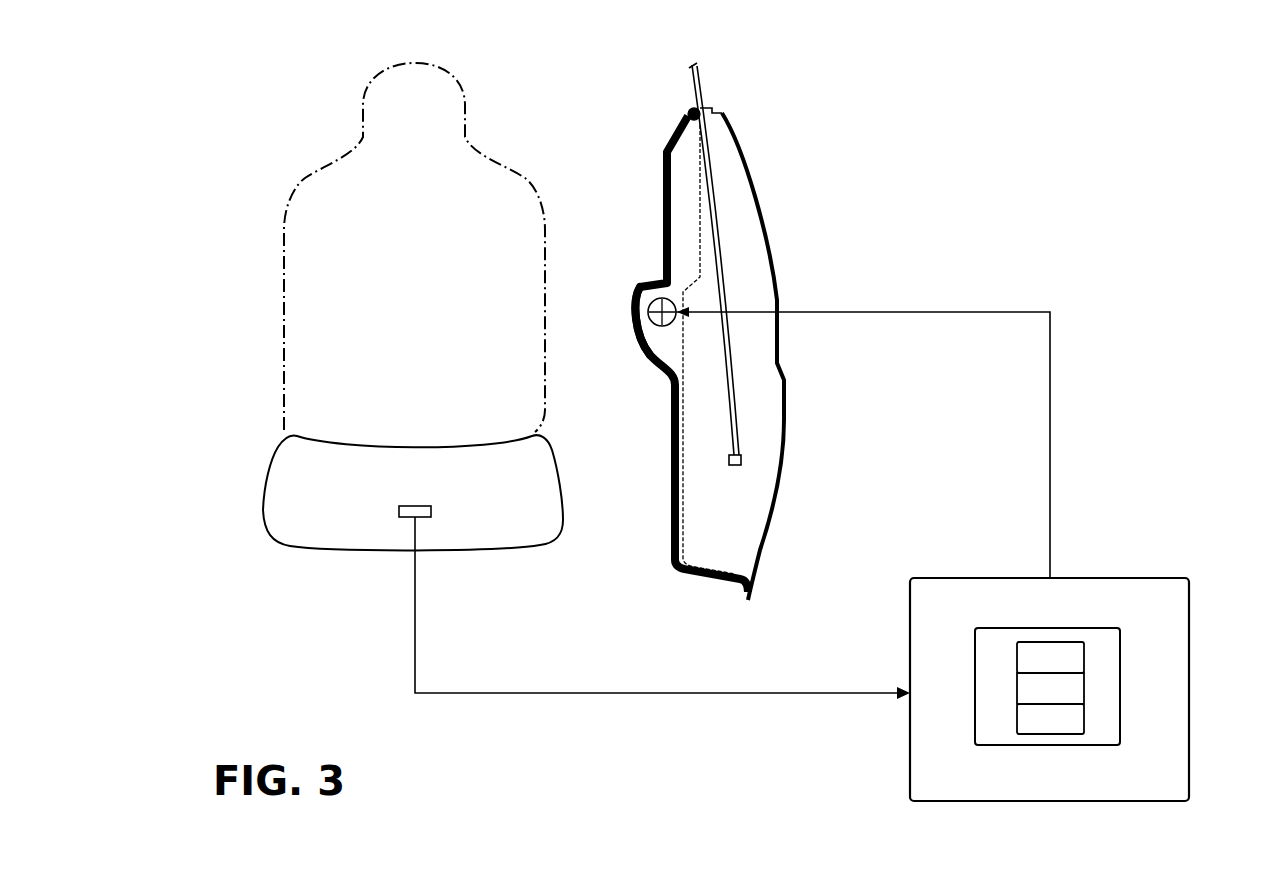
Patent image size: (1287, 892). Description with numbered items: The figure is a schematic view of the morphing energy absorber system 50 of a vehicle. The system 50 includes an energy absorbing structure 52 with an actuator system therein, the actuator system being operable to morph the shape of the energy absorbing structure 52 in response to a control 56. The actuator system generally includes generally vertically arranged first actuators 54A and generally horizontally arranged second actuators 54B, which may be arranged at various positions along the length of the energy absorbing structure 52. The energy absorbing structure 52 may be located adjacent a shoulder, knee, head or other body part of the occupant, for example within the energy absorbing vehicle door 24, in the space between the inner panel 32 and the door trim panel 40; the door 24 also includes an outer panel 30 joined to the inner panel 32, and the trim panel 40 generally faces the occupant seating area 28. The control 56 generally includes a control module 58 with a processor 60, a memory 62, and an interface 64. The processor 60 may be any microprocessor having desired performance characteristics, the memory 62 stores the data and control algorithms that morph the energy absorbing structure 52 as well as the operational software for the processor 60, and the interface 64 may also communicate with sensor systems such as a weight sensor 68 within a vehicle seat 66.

The energy absorbing vehicle door 24 is at (786, 134).
The occupant seating area 28 is at (293, 174).
The outer panel 30 is at (787, 398).
The inner panel 32 is at (725, 242).
The door trim panel 40 is at (670, 444).
The morphing energy absorber system 50 is at (974, 195).
The energy absorbing structure 52 is at (655, 334).
The first actuators 54A is at (640, 287).
The second actuators 54B is at (637, 326).
The control 56 is at (1137, 588).
The control module 58 is at (1122, 665).
The processor 60 is at (1050, 657).
The memory 62 is at (1050, 688).
The interface 64 is at (1050, 719).
The vehicle seat 66 is at (492, 526).
The weight sensor 68 is at (400, 511).